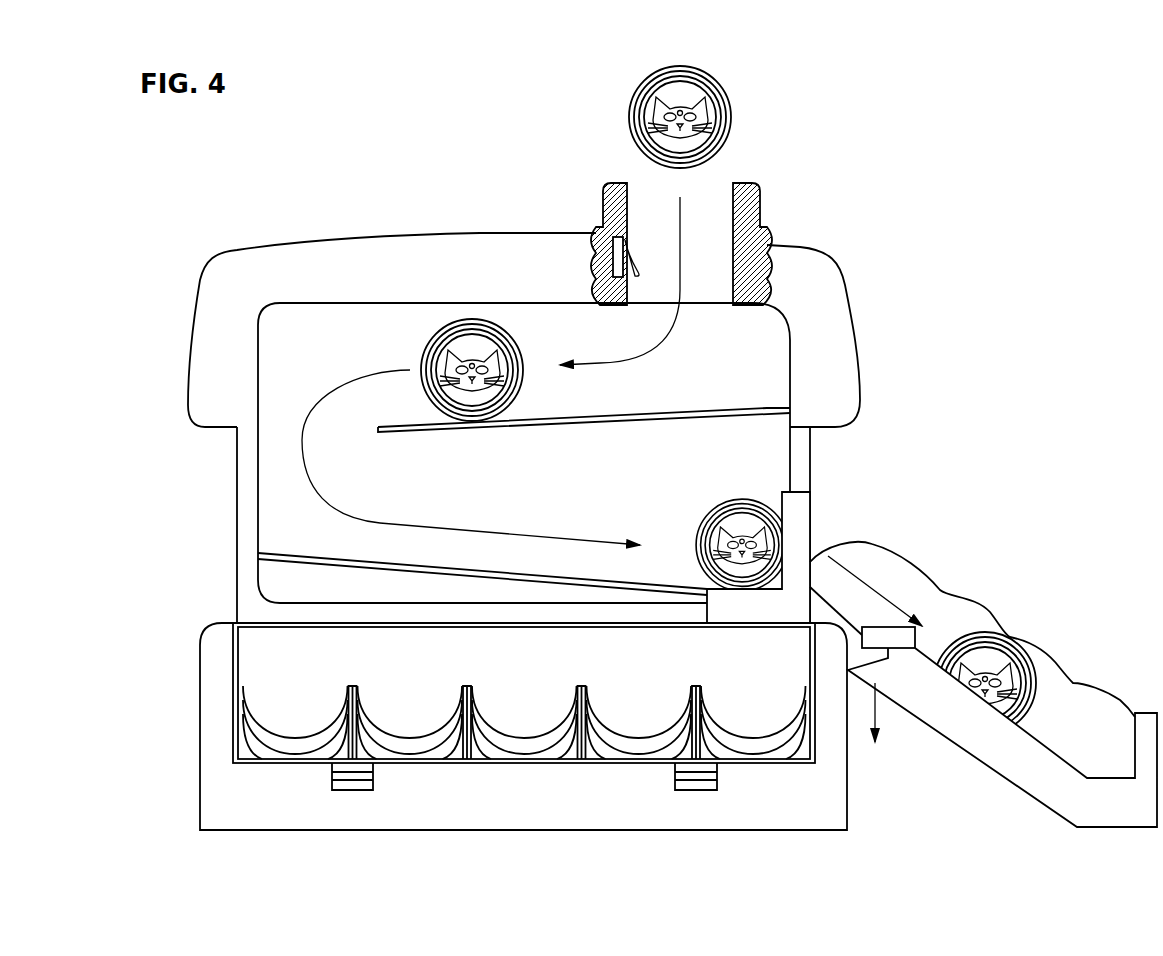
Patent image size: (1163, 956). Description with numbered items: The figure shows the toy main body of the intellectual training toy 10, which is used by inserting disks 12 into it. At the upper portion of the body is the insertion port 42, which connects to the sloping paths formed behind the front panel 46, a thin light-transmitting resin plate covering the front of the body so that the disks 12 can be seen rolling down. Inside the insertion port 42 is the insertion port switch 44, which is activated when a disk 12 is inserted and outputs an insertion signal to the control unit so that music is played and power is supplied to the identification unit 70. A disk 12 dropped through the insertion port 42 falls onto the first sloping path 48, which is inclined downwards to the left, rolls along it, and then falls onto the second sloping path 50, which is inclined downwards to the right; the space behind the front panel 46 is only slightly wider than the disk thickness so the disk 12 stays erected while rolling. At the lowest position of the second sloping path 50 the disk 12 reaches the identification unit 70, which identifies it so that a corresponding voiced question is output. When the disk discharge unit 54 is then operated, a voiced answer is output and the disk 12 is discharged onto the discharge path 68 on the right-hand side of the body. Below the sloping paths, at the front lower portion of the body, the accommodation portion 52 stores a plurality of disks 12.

The intellectual training toy 10 is at (978, 235).
The disk 12 is at (735, 125).
The insertion port 42 is at (660, 228).
The insertion port switch 44 is at (617, 262).
The front panel 46 is at (390, 338).
The first sloping path 48 is at (767, 408).
The second sloping path 50 is at (315, 557).
The accommodation portion 52 is at (313, 660).
The disk discharge unit 54 is at (893, 638).
The discharge path 68 is at (1075, 712).
The identification unit 70 is at (795, 520).